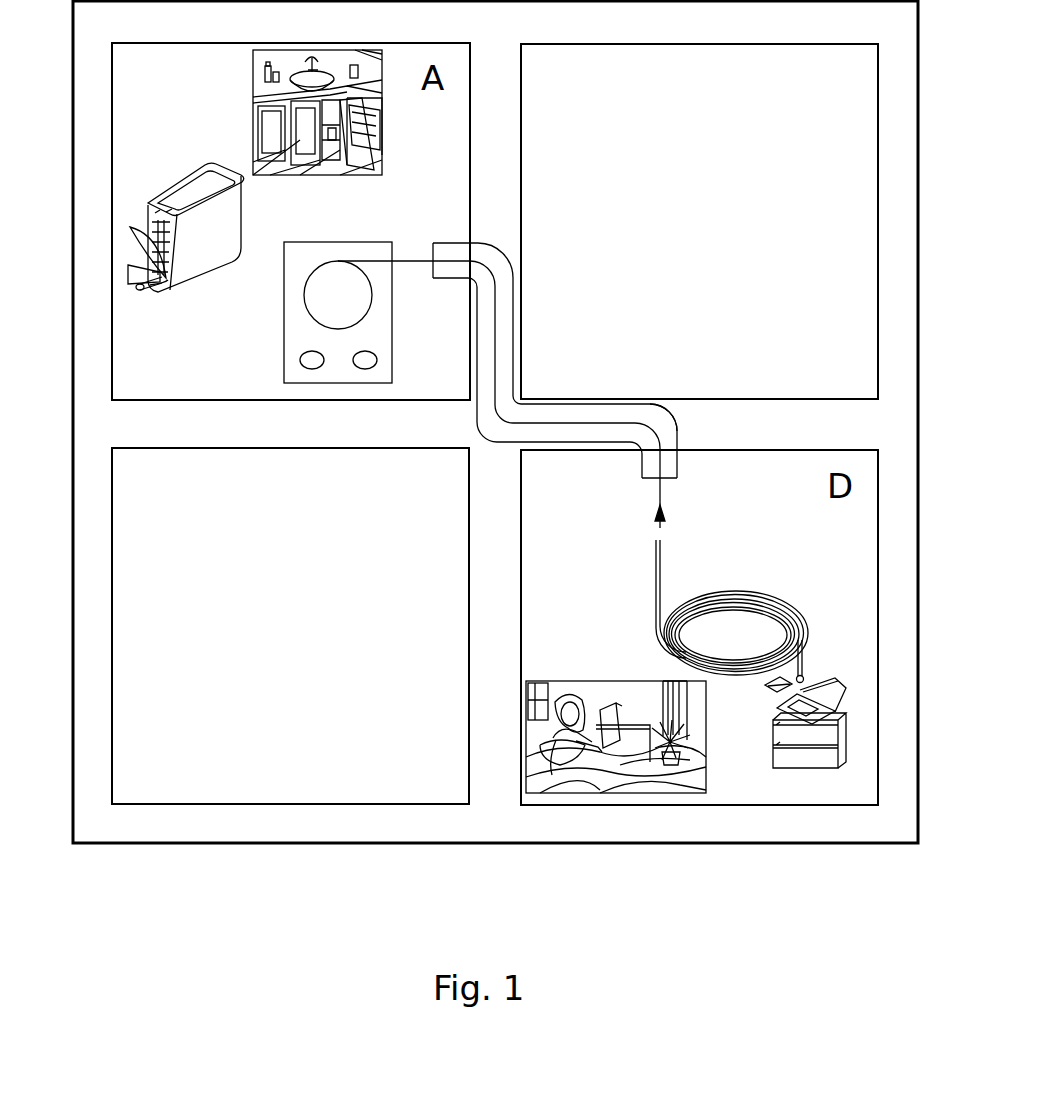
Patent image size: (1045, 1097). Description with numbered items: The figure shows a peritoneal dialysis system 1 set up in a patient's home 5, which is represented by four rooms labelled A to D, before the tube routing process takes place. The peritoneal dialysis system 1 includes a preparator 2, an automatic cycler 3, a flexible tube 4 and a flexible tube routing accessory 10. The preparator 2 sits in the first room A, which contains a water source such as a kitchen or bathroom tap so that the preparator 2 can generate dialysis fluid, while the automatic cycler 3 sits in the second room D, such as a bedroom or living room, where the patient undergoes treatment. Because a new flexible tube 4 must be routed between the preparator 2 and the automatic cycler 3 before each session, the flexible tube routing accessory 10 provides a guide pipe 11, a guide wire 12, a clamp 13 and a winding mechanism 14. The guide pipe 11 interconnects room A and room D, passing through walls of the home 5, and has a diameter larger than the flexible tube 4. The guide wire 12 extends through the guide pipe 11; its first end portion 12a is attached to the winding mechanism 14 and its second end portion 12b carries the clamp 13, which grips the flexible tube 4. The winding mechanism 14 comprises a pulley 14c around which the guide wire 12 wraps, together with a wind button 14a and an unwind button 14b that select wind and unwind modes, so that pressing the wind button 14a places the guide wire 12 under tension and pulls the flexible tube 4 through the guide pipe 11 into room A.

The peritoneal dialysis system 1 is at (132, 77).
The preparator 2 is at (163, 183).
The automatic cycler 3 is at (838, 722).
The flexible tube 4 is at (807, 620).
The patient's home 5 is at (704, 57).
The flexible tube routing accessory 10 is at (352, 550).
The guide pipe 11 is at (670, 414).
The guide wire 12 is at (563, 350).
The first end portion 12a is at (412, 260).
The second end portion 12b is at (659, 500).
The clamp 13 is at (659, 527).
The winding mechanism 14 is at (283, 342).
The wind button 14a is at (307, 369).
The unwind button 14b is at (360, 369).
The pulley 14c is at (305, 304).